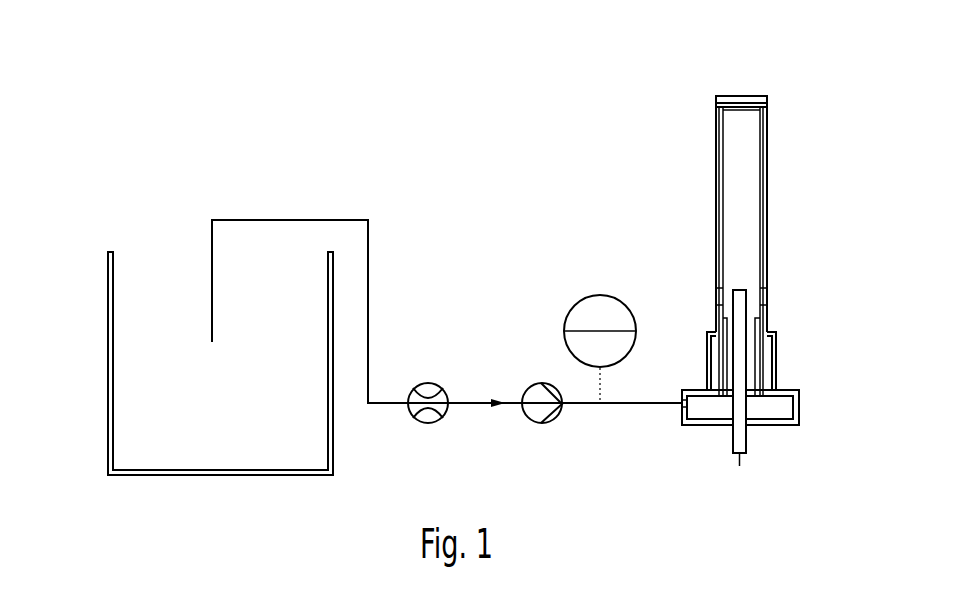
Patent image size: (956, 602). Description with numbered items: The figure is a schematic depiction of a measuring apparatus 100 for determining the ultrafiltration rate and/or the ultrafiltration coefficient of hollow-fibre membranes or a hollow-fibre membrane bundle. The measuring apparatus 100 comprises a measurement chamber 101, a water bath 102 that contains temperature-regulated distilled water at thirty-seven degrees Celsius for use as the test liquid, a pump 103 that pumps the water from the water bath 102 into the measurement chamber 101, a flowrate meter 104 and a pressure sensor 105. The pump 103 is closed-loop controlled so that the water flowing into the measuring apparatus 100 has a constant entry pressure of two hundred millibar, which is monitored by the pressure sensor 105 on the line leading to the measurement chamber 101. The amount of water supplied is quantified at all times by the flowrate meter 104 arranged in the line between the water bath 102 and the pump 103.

The measuring apparatus 100 is at (224, 80).
The measurement chamber 101 is at (776, 158).
The water bath 102 is at (96, 286).
The pump 103 is at (536, 378).
The flowrate meter 104 is at (427, 378).
The pressure sensor 105 is at (632, 292).